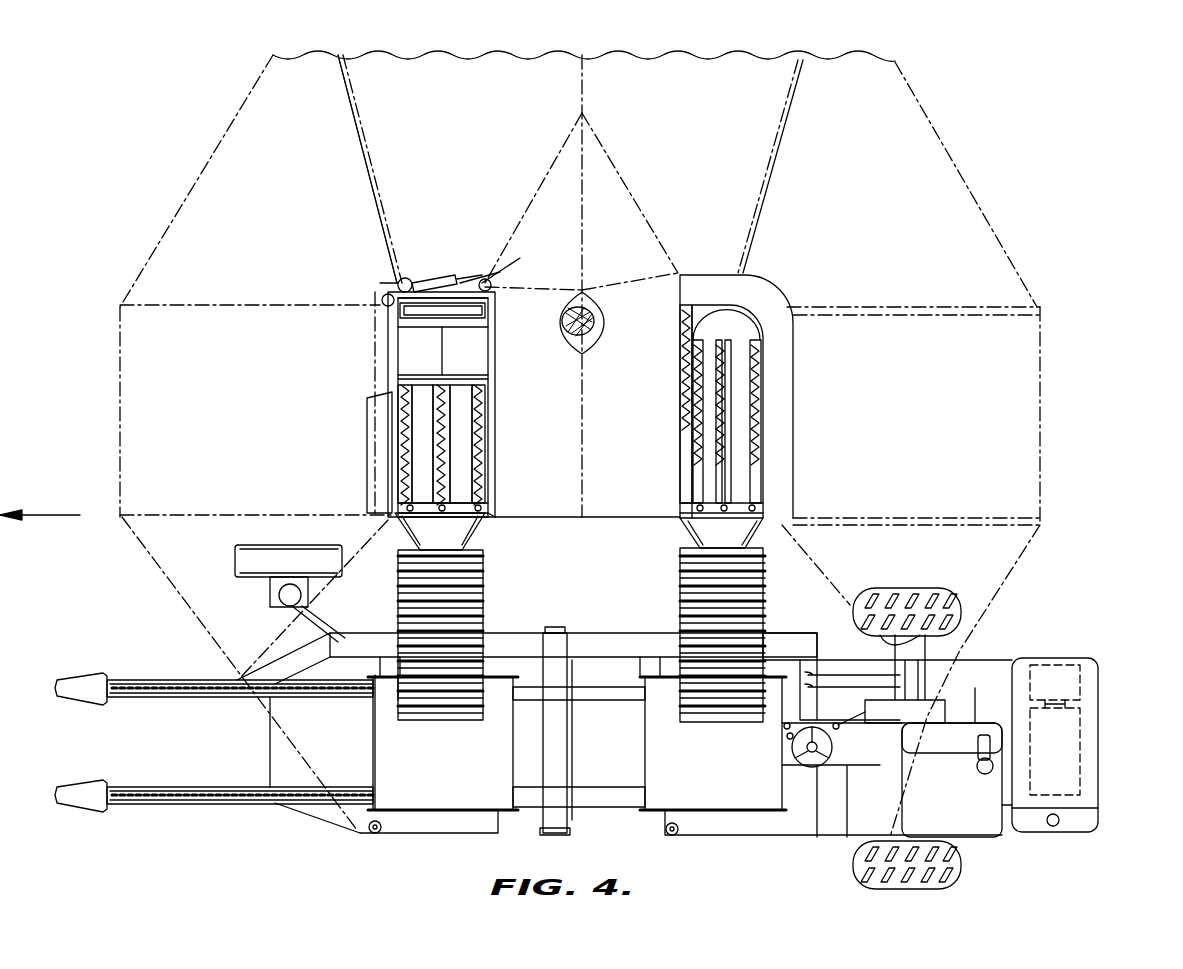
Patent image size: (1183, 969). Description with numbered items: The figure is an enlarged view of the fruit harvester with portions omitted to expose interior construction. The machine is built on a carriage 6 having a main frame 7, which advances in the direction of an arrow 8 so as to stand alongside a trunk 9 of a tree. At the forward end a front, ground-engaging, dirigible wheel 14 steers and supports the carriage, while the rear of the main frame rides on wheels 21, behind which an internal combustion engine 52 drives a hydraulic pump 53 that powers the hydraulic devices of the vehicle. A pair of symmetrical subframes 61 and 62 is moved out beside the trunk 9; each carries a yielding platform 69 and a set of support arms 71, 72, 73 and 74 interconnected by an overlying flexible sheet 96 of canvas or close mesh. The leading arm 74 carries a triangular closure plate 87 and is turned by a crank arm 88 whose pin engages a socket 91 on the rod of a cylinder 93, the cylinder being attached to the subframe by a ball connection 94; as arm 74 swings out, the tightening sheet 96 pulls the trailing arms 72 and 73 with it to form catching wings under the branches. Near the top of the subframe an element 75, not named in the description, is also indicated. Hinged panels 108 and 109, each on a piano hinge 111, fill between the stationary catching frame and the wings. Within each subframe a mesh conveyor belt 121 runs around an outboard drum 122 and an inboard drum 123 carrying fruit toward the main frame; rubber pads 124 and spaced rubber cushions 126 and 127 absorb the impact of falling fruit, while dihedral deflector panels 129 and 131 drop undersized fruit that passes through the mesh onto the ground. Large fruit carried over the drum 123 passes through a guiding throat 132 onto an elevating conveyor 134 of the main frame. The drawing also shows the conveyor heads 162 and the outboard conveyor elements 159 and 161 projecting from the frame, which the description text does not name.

The carriage 6 is at (503, 626).
The main frame 7 is at (594, 633).
The arrow 8 is at (62, 515).
The trunk 9 is at (598, 323).
The front, ground-engaging, dirigible wheel 14 is at (236, 560).
The wheels 21 is at (964, 622).
The internal combustion engine 52 is at (1080, 746).
The hydraulic pump 53 is at (1085, 680).
The subframe 61 is at (386, 358).
The subframe 62 is at (766, 415).
The platform 69 is at (560, 455).
The support arm 71 is at (202, 512).
The support arm 72 is at (249, 304).
The support arm 73 is at (378, 178).
The support arm 74 is at (530, 194).
The tower top plate 75 is at (490, 292).
The triangular closure plate 87 is at (559, 170).
The crank arm 88 is at (490, 285).
The socket 91 is at (498, 258).
The cylinder 93 is at (415, 277).
The ball connection 94 is at (395, 285).
The flexible sheet 96 is at (290, 208).
The movable panel 108 is at (180, 597).
The movable panel 109 is at (1032, 572).
The piano hinge 111 is at (240, 666).
The conveyor belt 121 is at (489, 492).
The outboard drum 122 is at (477, 312).
The inboard drum 123 is at (487, 513).
The rubber pads 124 is at (367, 420).
The rubber cushion 126 is at (425, 425).
The rubber cushion 127 is at (465, 430).
The dihedral deflector panel 129 is at (400, 487).
The dihedral deflector panel 131 is at (478, 468).
The guiding throat 132 is at (455, 545).
The elevating conveyor 134 is at (485, 590).
The conveyor 159 is at (180, 700).
The conveyor 161 is at (194, 785).
The conveyor head 162 is at (94, 674).